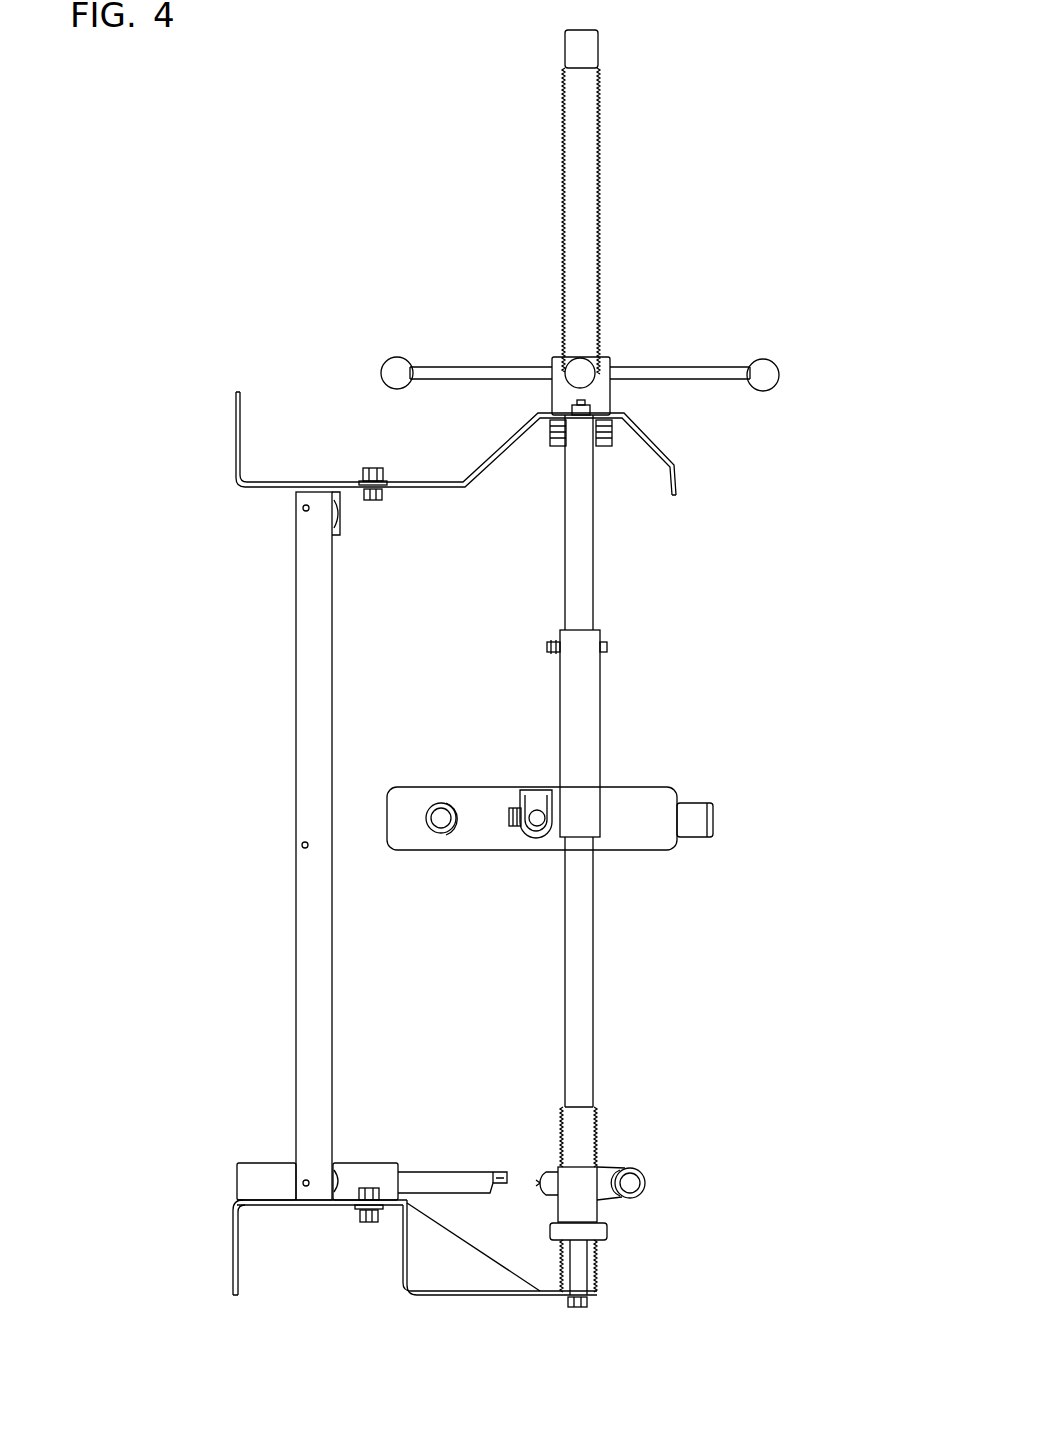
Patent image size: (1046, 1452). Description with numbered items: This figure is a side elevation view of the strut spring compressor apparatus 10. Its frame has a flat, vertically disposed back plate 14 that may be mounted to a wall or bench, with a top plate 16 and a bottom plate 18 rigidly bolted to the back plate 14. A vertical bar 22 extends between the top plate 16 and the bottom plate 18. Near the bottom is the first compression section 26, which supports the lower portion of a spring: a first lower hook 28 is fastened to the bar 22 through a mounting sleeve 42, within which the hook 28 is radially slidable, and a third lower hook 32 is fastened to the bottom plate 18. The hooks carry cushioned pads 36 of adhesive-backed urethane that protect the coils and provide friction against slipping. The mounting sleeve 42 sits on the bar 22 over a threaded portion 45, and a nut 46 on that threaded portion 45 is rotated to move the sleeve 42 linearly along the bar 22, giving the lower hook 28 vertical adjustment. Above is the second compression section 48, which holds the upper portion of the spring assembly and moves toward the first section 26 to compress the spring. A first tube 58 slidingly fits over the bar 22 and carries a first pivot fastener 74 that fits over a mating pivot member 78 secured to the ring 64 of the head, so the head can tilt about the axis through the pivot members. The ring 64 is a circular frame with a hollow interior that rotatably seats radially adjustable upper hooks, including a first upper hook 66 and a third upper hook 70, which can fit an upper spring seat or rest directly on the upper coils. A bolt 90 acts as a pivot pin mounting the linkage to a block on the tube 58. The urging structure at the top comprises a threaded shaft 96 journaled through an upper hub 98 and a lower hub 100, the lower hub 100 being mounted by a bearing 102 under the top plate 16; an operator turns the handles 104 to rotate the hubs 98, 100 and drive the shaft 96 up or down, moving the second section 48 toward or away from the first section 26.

The apparatus 10 is at (285, 250).
The back plate 14 is at (310, 727).
The top plate 16 is at (427, 484).
The bottom plate 18 is at (425, 1255).
The first parallel bar 22 is at (585, 1032).
The first compression section 26 is at (715, 1156).
The first lower hook 28 is at (548, 1180).
The third lower hook 32 is at (440, 1178).
The cushioned pad 36 is at (498, 1173).
The mounting sleeve 42 is at (590, 1178).
The threaded portion 45 is at (580, 1272).
The nut 46 is at (600, 1235).
The second compression section 48 is at (735, 686).
The first tube 58 is at (590, 715).
The ring 64 is at (636, 840).
The first upper hook 66 is at (690, 807).
The third upper hook 70 is at (465, 813).
The first pivot fastener 74 is at (550, 830).
The pivot member 78 is at (520, 832).
The bolt 90 is at (605, 647).
The threaded shaft 96 is at (580, 195).
The upper hub 98 is at (598, 395).
The lower hub 100 is at (600, 440).
The bearing 102 is at (553, 425).
The handles 104 is at (496, 375).